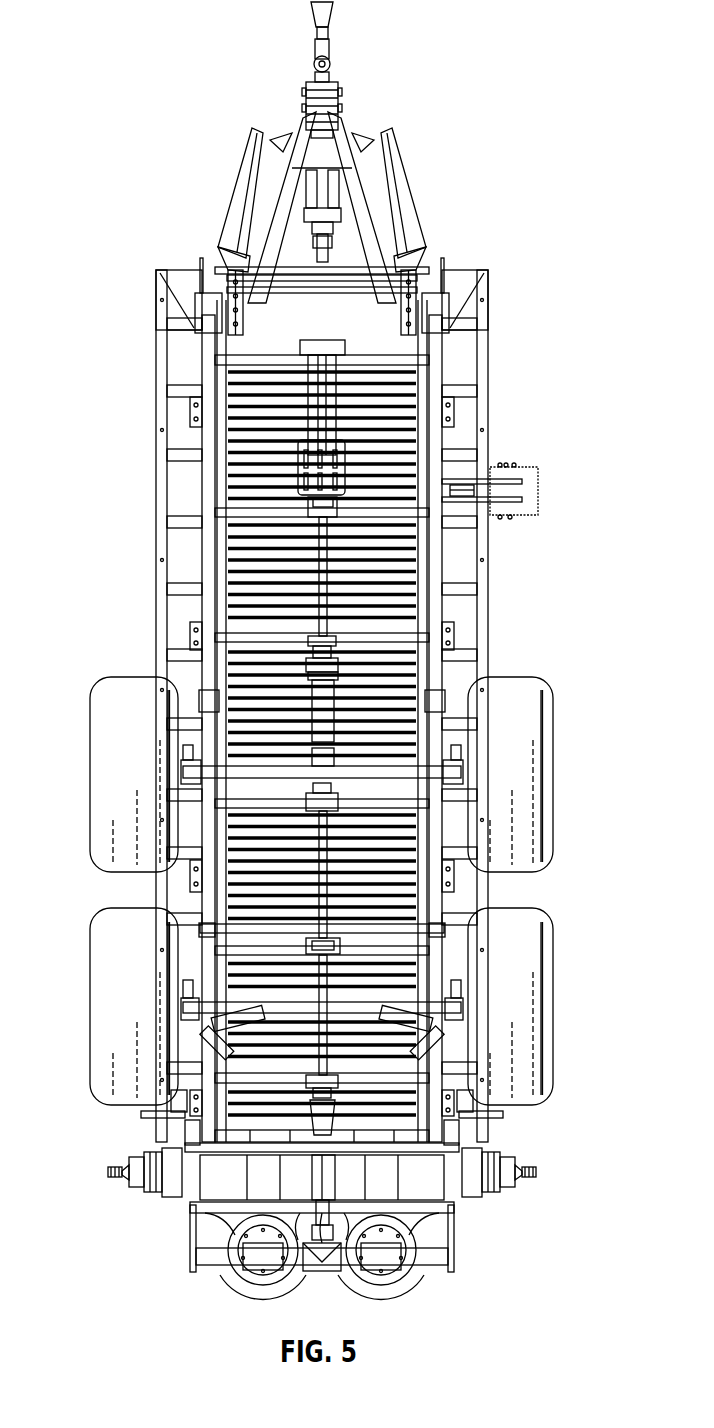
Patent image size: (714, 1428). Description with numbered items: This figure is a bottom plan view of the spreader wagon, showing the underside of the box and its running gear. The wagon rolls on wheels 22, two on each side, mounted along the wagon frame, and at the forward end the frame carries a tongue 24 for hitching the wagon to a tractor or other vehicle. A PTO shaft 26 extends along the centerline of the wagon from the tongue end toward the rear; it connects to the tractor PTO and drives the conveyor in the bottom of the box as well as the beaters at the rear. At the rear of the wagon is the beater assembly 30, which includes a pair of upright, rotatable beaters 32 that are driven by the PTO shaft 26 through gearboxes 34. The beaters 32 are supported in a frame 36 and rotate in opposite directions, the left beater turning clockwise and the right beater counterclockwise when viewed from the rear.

The wheels 22 is at (96, 692).
The tongue 24 is at (331, 62).
The PTO shaft 26 is at (334, 6).
The beater assembly 30 is at (310, 1242).
The beaters 32 is at (213, 1283).
The gearboxes 34 is at (258, 1264).
The frame 36 is at (457, 1235).